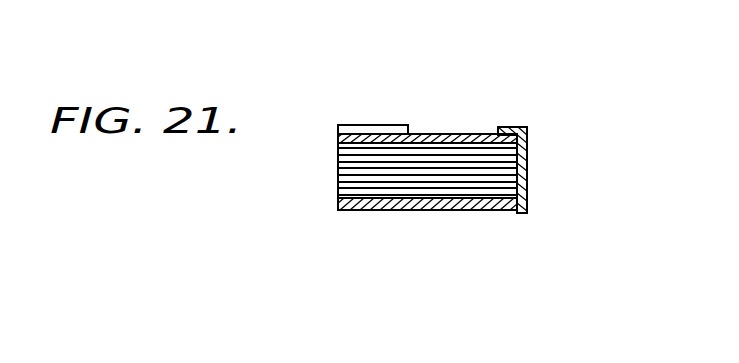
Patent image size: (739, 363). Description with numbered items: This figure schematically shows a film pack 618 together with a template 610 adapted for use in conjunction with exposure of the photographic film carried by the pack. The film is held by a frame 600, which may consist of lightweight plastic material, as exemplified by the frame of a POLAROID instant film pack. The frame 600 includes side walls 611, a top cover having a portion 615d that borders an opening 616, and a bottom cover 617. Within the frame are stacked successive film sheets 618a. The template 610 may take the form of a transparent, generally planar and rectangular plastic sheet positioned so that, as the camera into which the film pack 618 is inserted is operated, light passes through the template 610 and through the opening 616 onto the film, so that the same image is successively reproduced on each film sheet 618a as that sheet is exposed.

The frame 600 is at (438, 172).
The template 610 is at (468, 132).
The side walls 611 is at (527, 178).
The top cover portion 615d is at (365, 125).
The opening 616 is at (438, 130).
The bottom cover 617 is at (495, 212).
The film pack 618 is at (369, 210).
The film sheets 618a is at (340, 171).